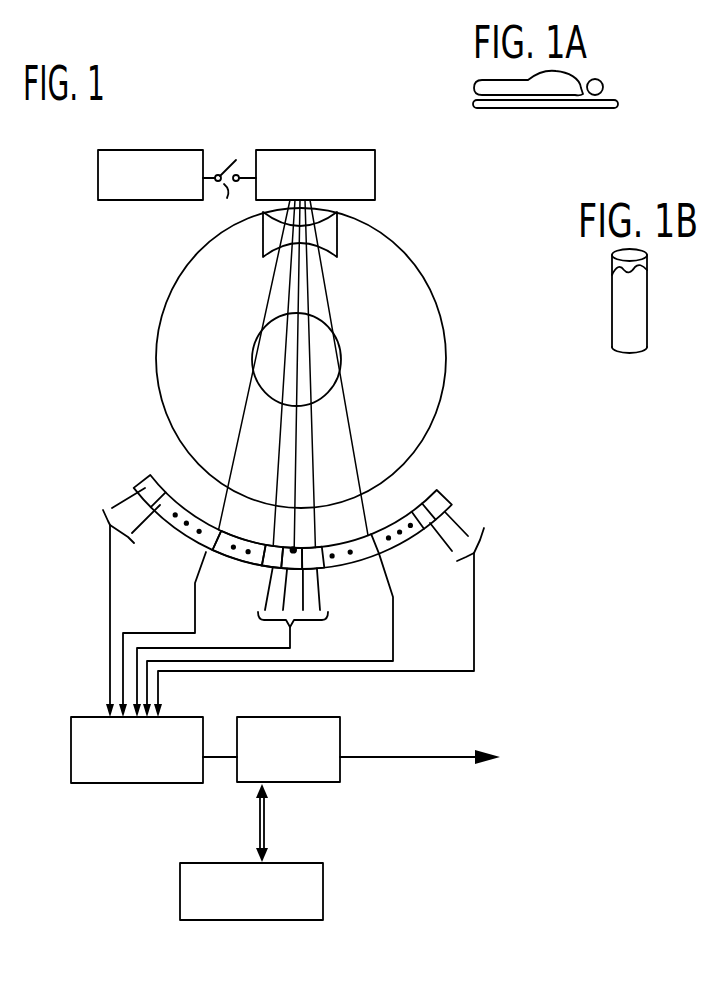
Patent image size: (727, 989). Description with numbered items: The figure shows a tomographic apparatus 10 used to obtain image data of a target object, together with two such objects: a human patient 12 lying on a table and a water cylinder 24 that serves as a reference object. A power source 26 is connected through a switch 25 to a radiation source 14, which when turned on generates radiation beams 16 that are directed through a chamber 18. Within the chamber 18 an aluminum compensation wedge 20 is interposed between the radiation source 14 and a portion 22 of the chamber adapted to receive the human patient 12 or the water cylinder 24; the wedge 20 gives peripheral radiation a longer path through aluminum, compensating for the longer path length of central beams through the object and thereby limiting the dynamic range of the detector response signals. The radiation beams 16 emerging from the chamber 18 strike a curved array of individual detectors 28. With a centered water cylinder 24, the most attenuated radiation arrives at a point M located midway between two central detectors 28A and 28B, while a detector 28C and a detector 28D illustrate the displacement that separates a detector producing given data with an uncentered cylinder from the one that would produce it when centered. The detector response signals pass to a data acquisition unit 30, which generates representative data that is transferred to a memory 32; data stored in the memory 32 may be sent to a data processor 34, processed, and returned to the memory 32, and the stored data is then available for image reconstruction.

In FIG. 1, the tomographic apparatus 10 is at (228, 90).
In FIG. 1A, the human patient 12 is at (545, 98).
In FIG. 1, the radiation source 14 is at (375, 190).
In FIG. 1, the radiation beams 16 is at (289, 290).
In FIG. 1, the chamber 18 is at (441, 405).
In FIG. 1, the aluminum compensation wedge 20 is at (337, 237).
In FIG. 1, the portion of chamber 22 is at (348, 370).
In FIG. 1B, the water cylinder 24 is at (637, 296).
In FIG. 1, the switch 25 is at (228, 164).
In FIG. 1, the power source 26 is at (98, 197).
In FIG. 1, the detectors 28 is at (140, 487).
In FIG. 1, the detector 28A is at (277, 572).
In FIG. 1, the detector 28B is at (311, 569).
In FIG. 1, the detector 28C is at (209, 553).
In FIG. 1, the detector 28D is at (265, 569).
In FIG. 1, the point M is at (294, 550).
In FIG. 1, the data acquisition unit 30 is at (71, 757).
In FIG. 1, the memory 32 is at (340, 772).
In FIG. 1, the data processor 34 is at (323, 882).